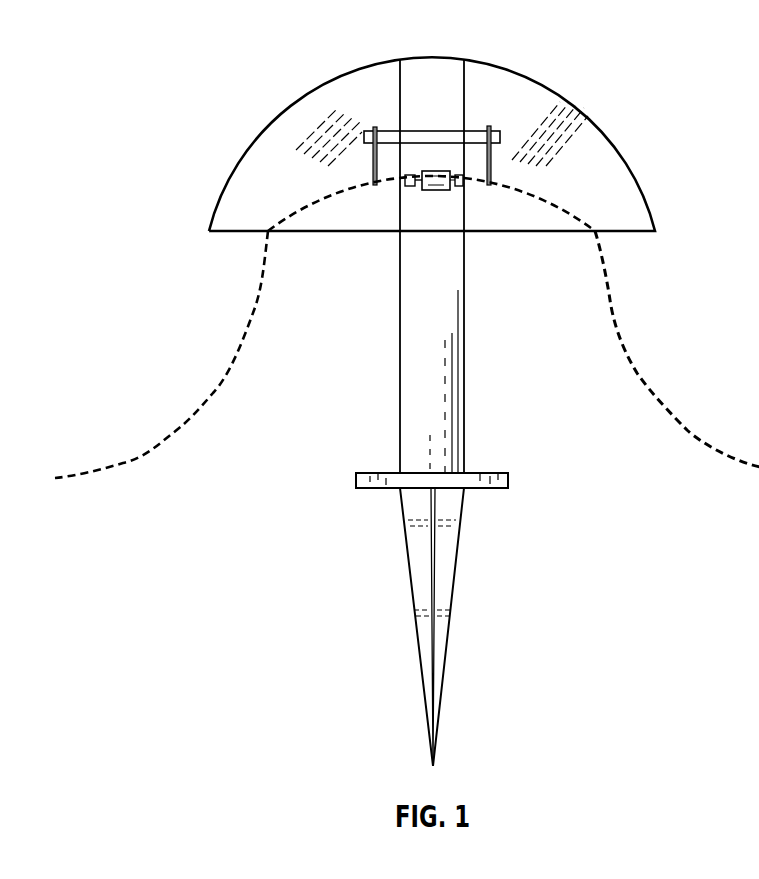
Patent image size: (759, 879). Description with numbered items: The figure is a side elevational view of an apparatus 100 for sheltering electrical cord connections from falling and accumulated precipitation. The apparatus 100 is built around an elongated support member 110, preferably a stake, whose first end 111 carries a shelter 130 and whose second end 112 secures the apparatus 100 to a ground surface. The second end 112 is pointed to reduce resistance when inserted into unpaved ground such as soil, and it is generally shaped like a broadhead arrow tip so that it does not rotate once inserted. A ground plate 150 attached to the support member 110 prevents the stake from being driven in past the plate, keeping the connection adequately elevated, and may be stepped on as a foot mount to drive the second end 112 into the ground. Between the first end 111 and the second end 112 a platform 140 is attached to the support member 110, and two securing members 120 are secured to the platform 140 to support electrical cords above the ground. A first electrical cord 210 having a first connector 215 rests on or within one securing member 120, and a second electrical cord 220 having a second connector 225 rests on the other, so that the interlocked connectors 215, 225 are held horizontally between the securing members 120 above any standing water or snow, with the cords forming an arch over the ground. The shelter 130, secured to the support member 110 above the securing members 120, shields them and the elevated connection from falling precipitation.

The apparatus 100 is at (157, 62).
The support member 110 is at (464, 385).
The first end 111 is at (470, 80).
The second end 112 is at (508, 486).
The securing member 120 is at (373, 168).
The shelter 130 is at (237, 190).
The platform 140 is at (390, 135).
The ground plate 150 is at (356, 480).
The first electrical cord 210 is at (123, 463).
The first connector 215 is at (425, 191).
The second electrical cord 220 is at (720, 452).
The second connector 225 is at (440, 191).